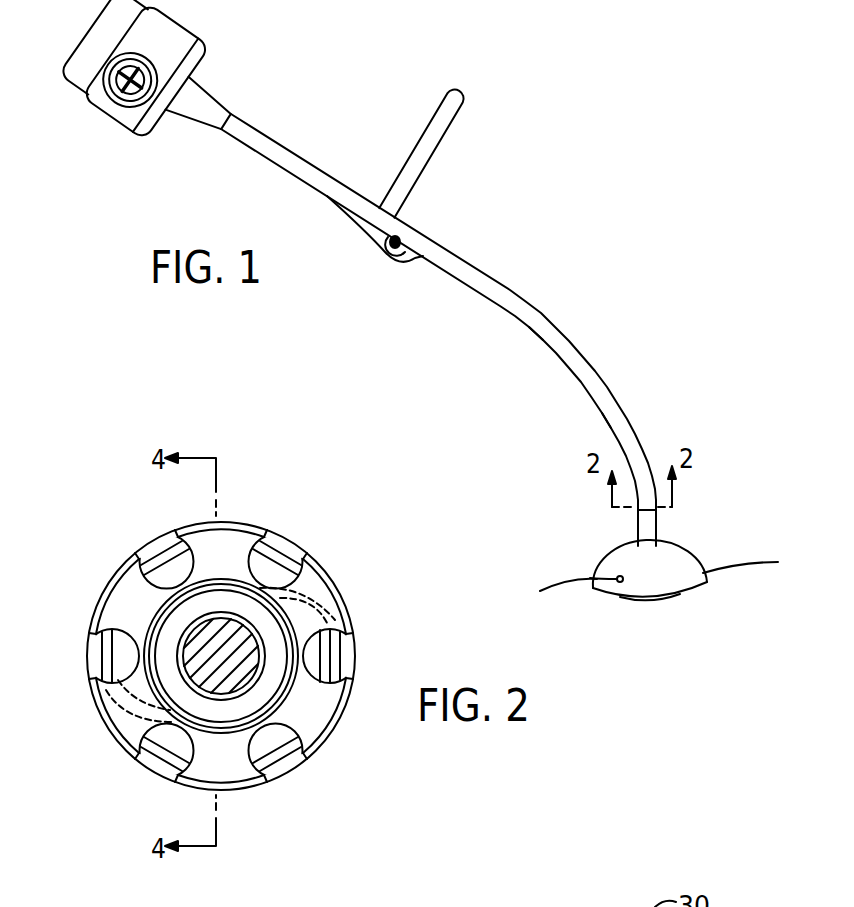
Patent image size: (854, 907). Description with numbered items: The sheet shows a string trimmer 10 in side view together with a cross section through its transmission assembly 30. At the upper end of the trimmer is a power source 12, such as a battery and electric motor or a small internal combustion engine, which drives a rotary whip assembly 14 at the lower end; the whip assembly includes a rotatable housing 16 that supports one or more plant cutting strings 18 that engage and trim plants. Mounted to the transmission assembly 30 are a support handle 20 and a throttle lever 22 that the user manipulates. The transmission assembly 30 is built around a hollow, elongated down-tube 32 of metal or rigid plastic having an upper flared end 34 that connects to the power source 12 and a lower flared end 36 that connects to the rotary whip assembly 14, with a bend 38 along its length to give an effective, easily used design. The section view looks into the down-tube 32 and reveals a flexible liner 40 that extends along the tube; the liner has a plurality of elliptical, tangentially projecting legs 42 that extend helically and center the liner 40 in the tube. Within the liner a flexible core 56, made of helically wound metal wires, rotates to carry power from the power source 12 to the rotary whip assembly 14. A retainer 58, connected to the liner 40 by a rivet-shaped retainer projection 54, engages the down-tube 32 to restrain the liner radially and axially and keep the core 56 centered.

In FIG. 1, the string trimmer 10 is at (606, 180).
In FIG. 1, the power source 12 is at (172, 18).
In FIG. 1, the rotary whip assembly 14 is at (682, 554).
In FIG. 1, the rotatable housing 16 is at (652, 598).
In FIG. 1, the plant cutting string 18 is at (590, 578).
In FIG. 1, the support handle 20 is at (412, 149).
In FIG. 1, the throttle lever 22 is at (374, 241).
In FIG. 1, the transmission assembly 30 is at (548, 311).
In FIG. 2, the transmission assembly 30 is at (361, 541).
In FIG. 1, the down-tube 32 is at (453, 251).
In FIG. 2, the down-tube 32 is at (318, 560).
In FIG. 1, the upper flared end 34 is at (212, 94).
In FIG. 1, the lower flared end 36 is at (657, 523).
In FIG. 1, the bend 38 is at (619, 398).
In FIG. 2, the flexible liner 40 is at (341, 639).
In FIG. 2, the legs 42 is at (170, 562).
In FIG. 2, the retainer projection 54 is at (253, 612).
In FIG. 2, the core 56 is at (200, 669).
In FIG. 2, the retainer 58 is at (312, 718).